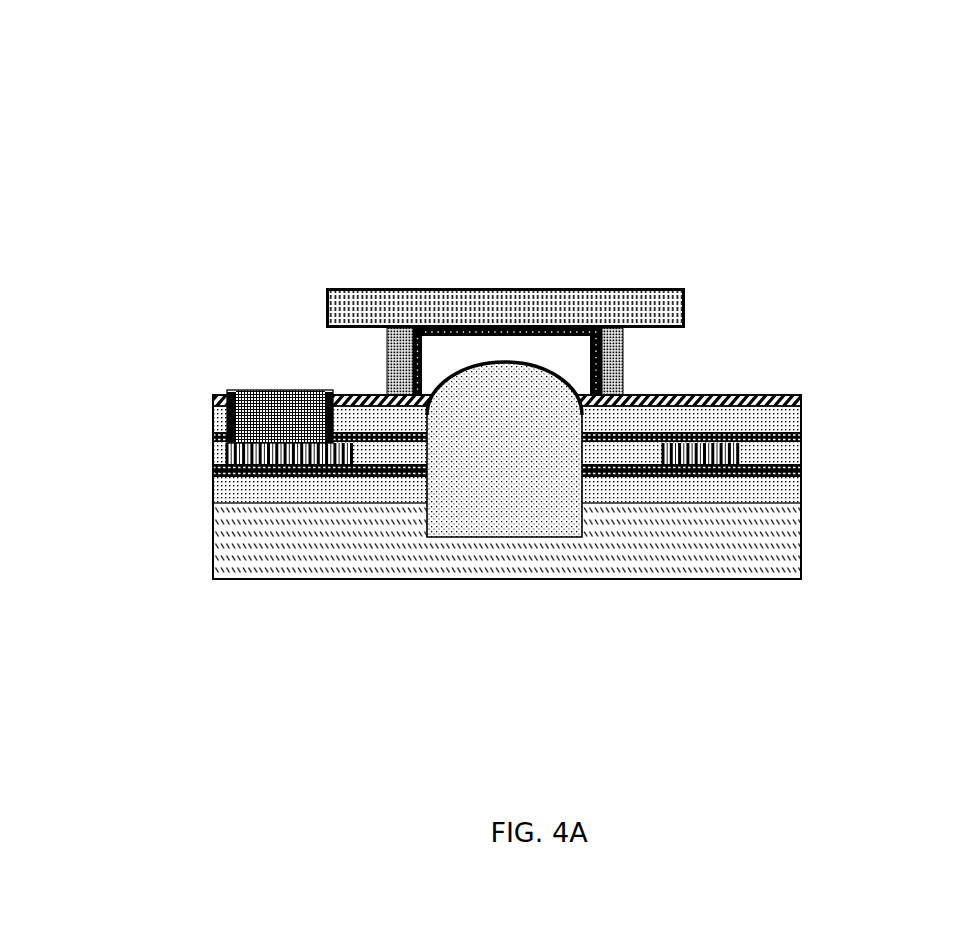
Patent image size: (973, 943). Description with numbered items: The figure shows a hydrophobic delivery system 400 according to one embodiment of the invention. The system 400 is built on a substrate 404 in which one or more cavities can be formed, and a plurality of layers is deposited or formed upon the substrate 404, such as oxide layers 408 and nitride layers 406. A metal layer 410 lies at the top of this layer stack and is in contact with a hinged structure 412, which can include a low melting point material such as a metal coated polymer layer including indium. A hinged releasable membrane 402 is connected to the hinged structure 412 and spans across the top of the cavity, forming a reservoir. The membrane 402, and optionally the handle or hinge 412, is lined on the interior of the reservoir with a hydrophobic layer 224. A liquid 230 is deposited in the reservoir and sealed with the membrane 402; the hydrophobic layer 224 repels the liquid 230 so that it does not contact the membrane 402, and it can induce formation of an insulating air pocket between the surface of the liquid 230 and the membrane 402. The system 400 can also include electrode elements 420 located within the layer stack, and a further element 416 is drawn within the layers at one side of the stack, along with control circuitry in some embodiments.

The hydrophobic delivery system 400 is at (158, 58).
The hydrophobic layer 224 is at (572, 325).
The liquid 230 is at (488, 520).
The hinged releasable membrane 402 is at (647, 288).
The substrate 404 is at (801, 522).
The nitride layer 406 is at (801, 437).
The oxide layer 408 is at (801, 417).
The metal layer 410 is at (763, 392).
The hinged structure 412 is at (387, 358).
The electrode block 416 is at (280, 390).
The electrode elements 420 is at (223, 452).